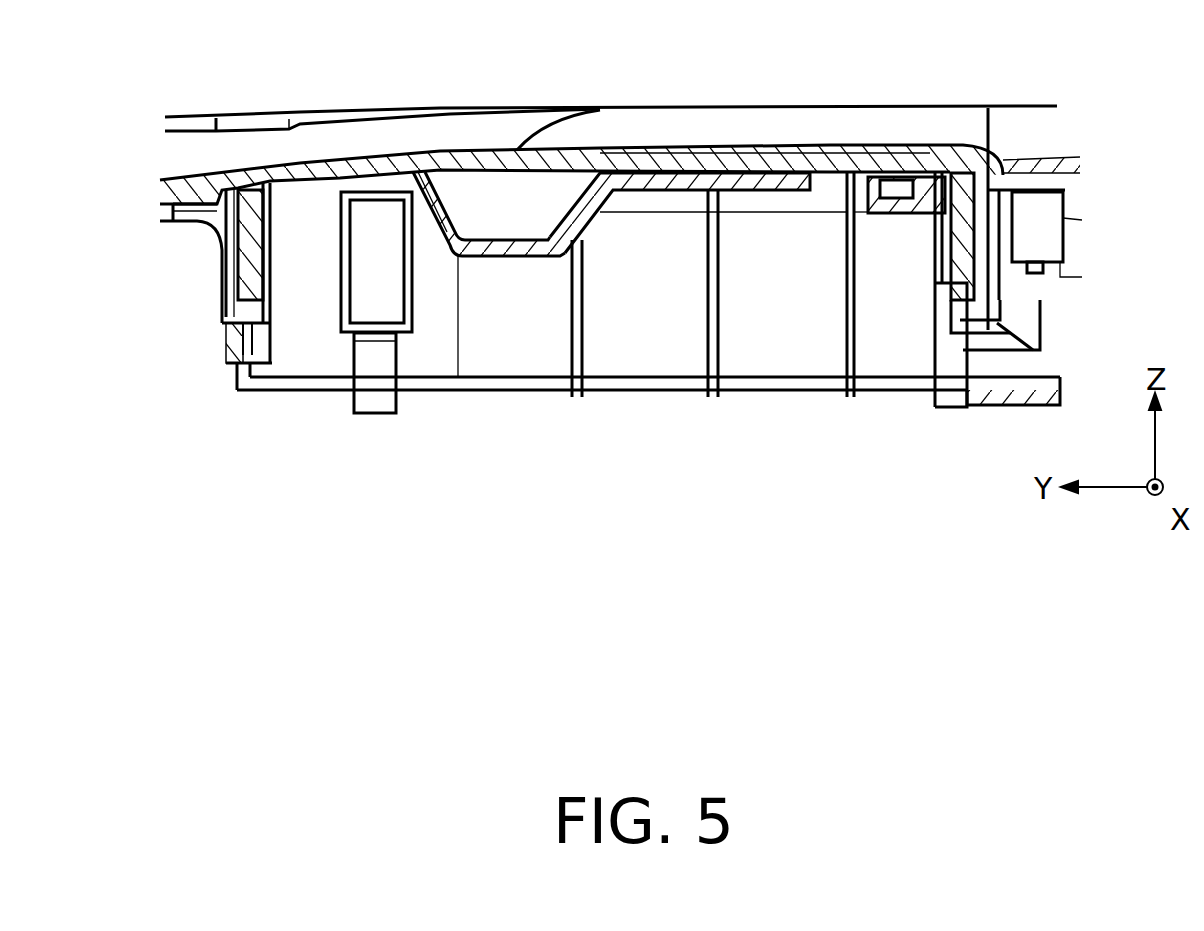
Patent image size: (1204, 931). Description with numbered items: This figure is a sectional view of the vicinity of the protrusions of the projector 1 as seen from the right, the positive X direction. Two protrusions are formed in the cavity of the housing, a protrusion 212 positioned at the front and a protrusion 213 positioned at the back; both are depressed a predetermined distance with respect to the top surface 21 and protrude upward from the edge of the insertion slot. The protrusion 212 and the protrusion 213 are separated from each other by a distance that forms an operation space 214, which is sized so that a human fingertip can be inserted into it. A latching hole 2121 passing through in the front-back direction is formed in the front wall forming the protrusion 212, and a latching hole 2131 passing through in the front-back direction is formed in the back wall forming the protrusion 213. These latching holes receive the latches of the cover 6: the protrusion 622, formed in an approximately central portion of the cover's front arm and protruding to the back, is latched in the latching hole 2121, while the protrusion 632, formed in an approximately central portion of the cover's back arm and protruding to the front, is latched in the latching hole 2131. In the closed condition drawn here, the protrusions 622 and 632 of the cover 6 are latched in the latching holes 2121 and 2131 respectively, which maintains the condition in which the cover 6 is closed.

The projector 1 is at (1008, 66).
The cover 6 is at (751, 160).
The top surface 21 is at (1073, 166).
The protrusion 212 is at (367, 192).
The protrusion 213 is at (763, 192).
The operation space 214 is at (517, 190).
The latching hole 2121 is at (290, 265).
The latching hole 2131 is at (935, 283).
The protrusion 622 is at (287, 277).
The protrusion 632 is at (940, 285).